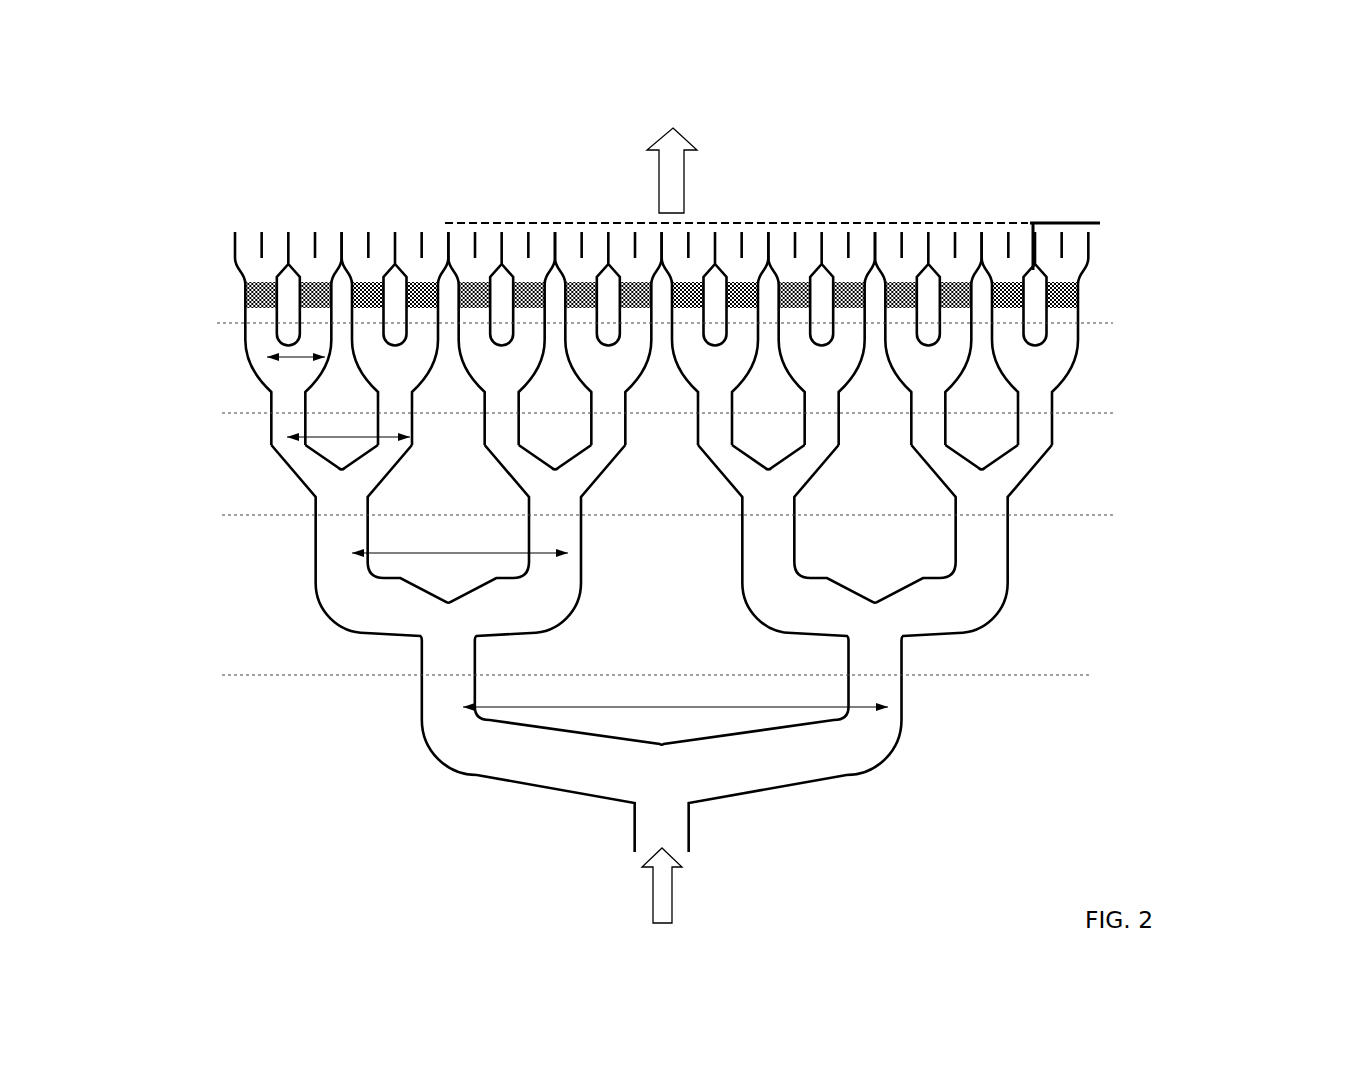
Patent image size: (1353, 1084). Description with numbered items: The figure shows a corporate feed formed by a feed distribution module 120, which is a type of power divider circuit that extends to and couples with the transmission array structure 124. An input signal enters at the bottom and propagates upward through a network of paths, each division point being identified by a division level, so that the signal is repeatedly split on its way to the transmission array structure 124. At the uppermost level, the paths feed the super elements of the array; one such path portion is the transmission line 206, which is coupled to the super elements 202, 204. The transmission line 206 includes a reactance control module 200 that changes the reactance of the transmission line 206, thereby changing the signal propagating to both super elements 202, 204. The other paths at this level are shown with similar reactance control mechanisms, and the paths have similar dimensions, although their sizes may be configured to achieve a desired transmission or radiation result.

The feed distribution module 120 is at (700, 511).
The transmission array structure 124 is at (736, 131).
The reactance control module 200 is at (958, 290).
The super element 202 is at (1163, 179).
The super element 204 is at (1065, 246).
The transmission line 206 is at (1080, 352).